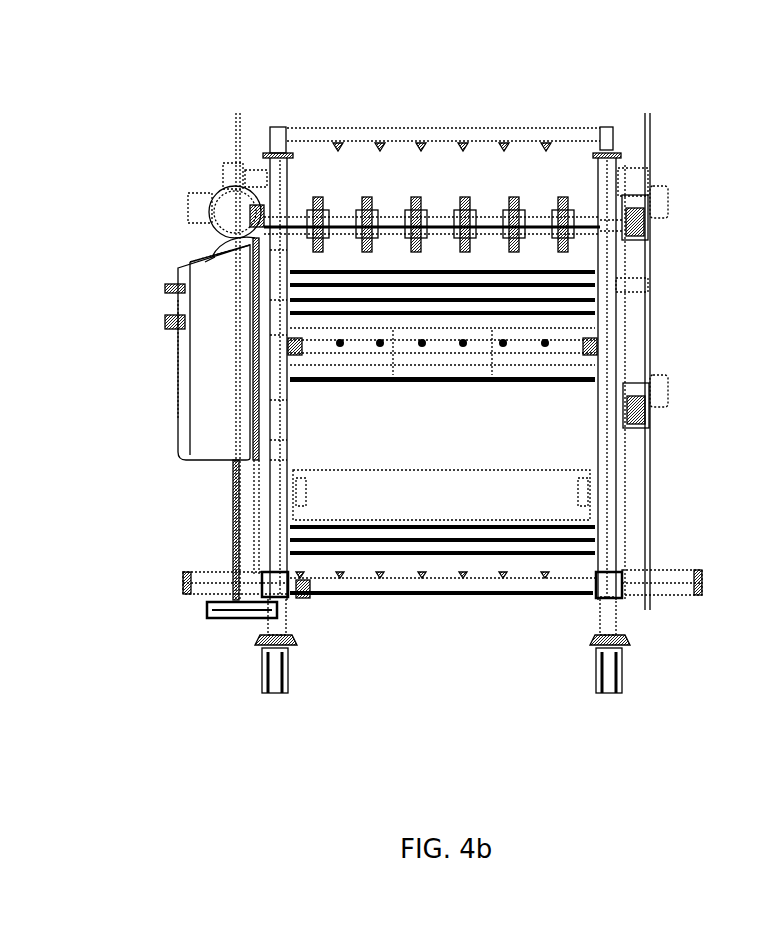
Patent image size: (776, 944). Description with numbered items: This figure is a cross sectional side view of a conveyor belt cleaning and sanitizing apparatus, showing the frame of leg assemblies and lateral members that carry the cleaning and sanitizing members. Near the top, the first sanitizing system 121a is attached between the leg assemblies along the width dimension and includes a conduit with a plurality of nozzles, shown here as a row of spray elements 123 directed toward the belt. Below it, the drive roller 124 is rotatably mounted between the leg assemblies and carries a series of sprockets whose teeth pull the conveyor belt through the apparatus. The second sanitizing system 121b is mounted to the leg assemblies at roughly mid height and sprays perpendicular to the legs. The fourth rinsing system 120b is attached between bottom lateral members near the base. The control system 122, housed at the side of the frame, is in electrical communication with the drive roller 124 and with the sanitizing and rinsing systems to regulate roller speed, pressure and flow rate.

The first sanitizing system 121a is at (318, 137).
The chain teeth 123 is at (546, 142).
The drive roller 124 is at (572, 202).
The second sanitizing system 121b is at (560, 350).
The control system 122 is at (205, 388).
The fourth rinsing system 120b is at (212, 583).